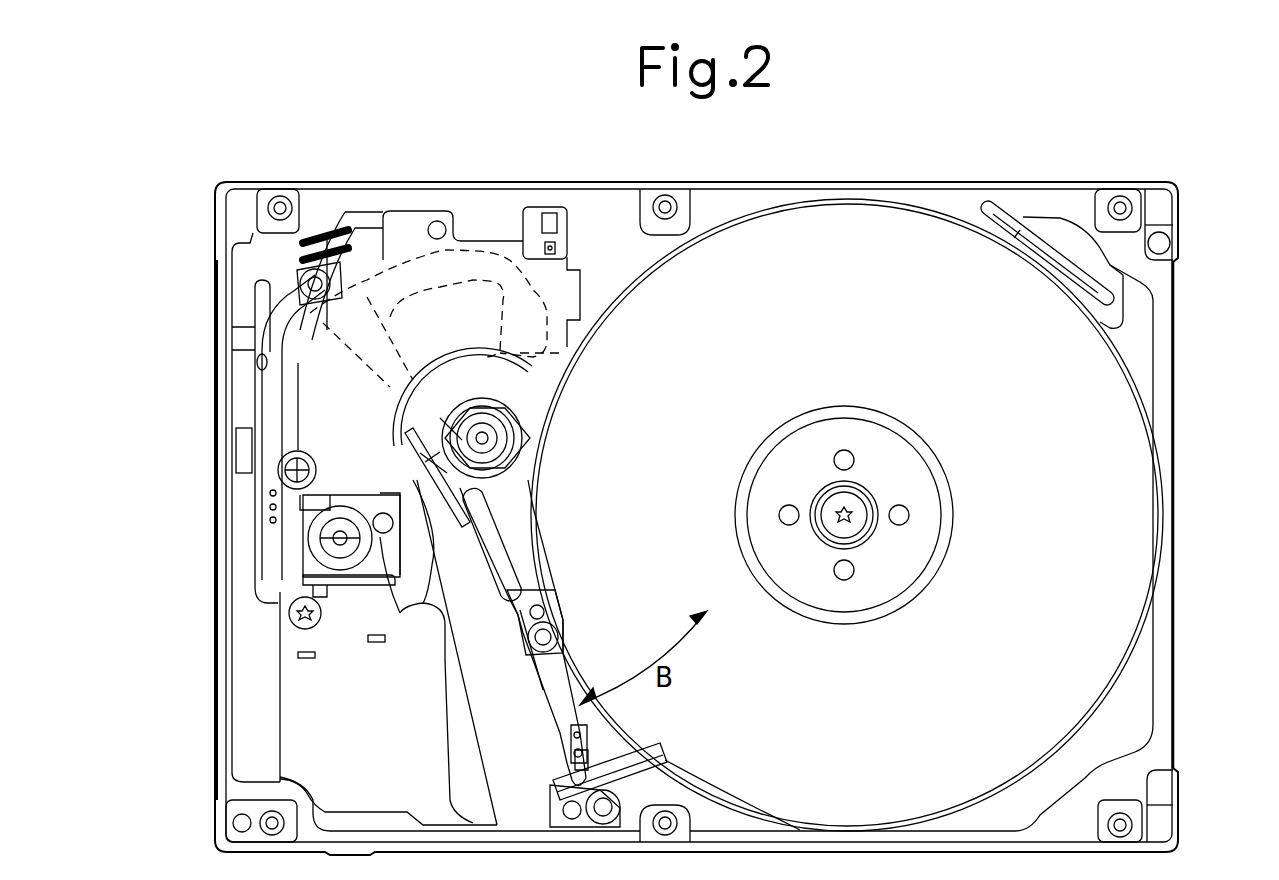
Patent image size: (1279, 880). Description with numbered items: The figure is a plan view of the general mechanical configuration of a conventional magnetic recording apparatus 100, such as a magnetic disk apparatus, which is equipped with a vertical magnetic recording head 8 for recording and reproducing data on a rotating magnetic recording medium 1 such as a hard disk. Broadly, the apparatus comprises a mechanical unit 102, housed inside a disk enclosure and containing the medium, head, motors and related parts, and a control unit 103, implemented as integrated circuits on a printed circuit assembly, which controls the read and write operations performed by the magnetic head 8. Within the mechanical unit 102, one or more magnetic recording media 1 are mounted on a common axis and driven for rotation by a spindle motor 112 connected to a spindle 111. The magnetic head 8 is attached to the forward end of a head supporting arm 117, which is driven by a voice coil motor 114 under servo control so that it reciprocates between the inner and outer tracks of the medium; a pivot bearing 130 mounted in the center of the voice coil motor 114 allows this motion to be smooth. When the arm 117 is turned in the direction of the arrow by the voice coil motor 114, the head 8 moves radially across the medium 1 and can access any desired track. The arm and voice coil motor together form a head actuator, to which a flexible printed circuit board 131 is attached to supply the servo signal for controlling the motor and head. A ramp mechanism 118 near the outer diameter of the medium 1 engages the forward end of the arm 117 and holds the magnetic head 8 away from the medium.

The magnetic recording medium 1 is at (1075, 405).
The magnetic head 8 is at (564, 760).
The magnetic recording apparatus 100 is at (207, 292).
The mechanical unit 102 is at (1176, 280).
The control unit 103 is at (203, 640).
The spindle 111 is at (888, 406).
The spindle motor 112 is at (867, 483).
The voice coil motor 114 is at (497, 235).
The head supporting arm 117 is at (486, 578).
The ramp mechanism 118 is at (676, 746).
The pivot bearing 130 is at (467, 425).
The flexible printed circuit board 131 is at (400, 613).